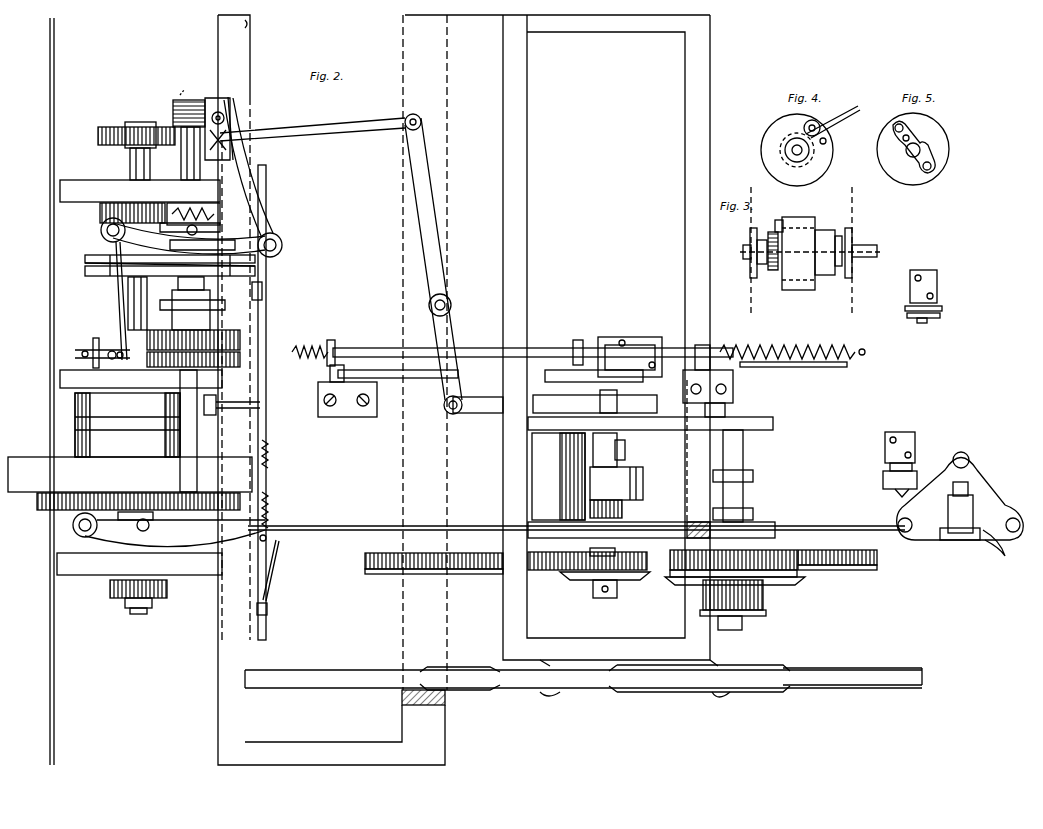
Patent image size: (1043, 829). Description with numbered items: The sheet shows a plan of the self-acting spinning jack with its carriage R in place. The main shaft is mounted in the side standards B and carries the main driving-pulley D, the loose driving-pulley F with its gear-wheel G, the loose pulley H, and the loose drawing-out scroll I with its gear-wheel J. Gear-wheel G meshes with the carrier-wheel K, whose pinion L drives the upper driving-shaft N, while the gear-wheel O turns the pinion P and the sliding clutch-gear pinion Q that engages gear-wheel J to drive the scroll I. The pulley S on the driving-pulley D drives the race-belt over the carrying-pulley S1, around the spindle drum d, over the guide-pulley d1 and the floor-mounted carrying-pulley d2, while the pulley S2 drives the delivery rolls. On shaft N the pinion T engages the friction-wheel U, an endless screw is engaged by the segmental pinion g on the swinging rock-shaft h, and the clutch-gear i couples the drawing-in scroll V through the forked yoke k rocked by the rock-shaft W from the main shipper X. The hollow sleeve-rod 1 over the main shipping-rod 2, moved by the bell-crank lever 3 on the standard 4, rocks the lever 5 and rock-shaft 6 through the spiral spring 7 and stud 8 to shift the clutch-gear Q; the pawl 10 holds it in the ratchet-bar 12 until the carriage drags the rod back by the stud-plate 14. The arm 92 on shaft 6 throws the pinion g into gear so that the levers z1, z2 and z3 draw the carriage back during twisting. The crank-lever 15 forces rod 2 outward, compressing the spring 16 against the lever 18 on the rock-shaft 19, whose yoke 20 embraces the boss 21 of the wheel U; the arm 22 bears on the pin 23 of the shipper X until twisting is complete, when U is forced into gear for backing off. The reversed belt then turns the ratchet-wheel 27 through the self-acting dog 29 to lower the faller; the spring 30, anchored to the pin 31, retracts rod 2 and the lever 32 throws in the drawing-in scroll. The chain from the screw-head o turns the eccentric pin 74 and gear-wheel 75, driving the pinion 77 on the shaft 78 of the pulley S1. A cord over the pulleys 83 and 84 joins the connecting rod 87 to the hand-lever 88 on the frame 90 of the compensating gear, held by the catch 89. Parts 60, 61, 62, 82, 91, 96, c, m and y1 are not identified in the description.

In FIG. 2, the hollow sleeve-rod 1 is at (533, 346).
In FIG. 2, the main shipping-rod 2 is at (98, 354).
In FIG. 2, the inclined bell-crank lever 3 is at (398, 378).
In FIG. 2, the standard 4 is at (347, 391).
In FIG. 2, the forked lever 5 is at (290, 342).
In FIG. 2, the rock-shaft 6 is at (270, 245).
In FIG. 2, the spiral spring 7 is at (310, 346).
In FIG. 2, the stud 8 is at (331, 346).
In FIG. 2, the pawl 10 is at (594, 377).
In FIG. 2, the ratchet-bar 12 is at (631, 364).
In FIG. 2, the stud-plate 14 is at (577, 345).
In FIG. 2, the crank-lever 15 is at (793, 372).
In FIG. 2, the spiral spring 16 is at (115, 347).
In FIG. 2, the forked lever 18 is at (88, 348).
In FIG. 2, the upright rock-shaft 19 is at (85, 525).
In FIG. 2, the forked yoke 20 is at (133, 523).
In FIG. 2, the boss of friction-gear wheel 21 is at (135, 512).
In FIG. 2, the arm 22 is at (175, 533).
In FIG. 2, the pin 23 is at (274, 508).
In FIG. 4, the ratchet-wheel 27 is at (797, 158).
In FIG. 3, the ratchet-wheel 27 is at (770, 275).
In FIG. 2, the self-acting dog 29 is at (616, 509).
In FIG. 3, the self-acting dog 29 is at (775, 220).
In FIG. 2, the spring 30 is at (787, 347).
In FIG. 2, the stud or pin 31 is at (870, 346).
In FIG. 2, the lever 32 is at (117, 301).
In FIG. 2, the clutch 60 is at (630, 552).
In FIG. 2, the gear 61 is at (733, 556).
In FIG. 2, the rack 62 is at (621, 563).
In FIG. 2, the pin 74 is at (728, 603).
In FIG. 2, the gear-wheel 75 is at (739, 585).
In FIG. 2, the pinion 77 is at (589, 572).
In FIG. 2, the shaft 78 is at (605, 597).
In FIG. 2, the arm 82 is at (232, 408).
In FIG. 2, the pulley 83 is at (270, 601).
In FIG. 2, the pulley 84 is at (279, 568).
In FIG. 2, the connecting cord or rod 87 is at (576, 520).
In FIG. 2, the hand-lever 88 is at (996, 551).
In FIG. 2, the catch 89 is at (960, 543).
In FIG. 2, the frame of compensating gear 90 is at (960, 496).
In FIG. 2, the spring 91 is at (274, 454).
In FIG. 2, the arm 92 is at (248, 168).
In FIG. 2, the pin 96 is at (272, 521).
In FIG. 2, the side standards B is at (139, 343).
In FIG. 2, the main driving-pulley D is at (132, 446).
In FIG. 2, the driving-pulley F is at (133, 423).
In FIG. 2, the gear-wheel G is at (62, 398).
In FIG. 2, the loose pulley H is at (157, 388).
In FIG. 2, the drawing-out scroll I is at (170, 270).
In FIG. 2, the gear-wheel J is at (124, 214).
In FIG. 2, the carrier-wheel K is at (232, 371).
In FIG. 2, the pinion L is at (268, 361).
In FIG. 2, the upper driving-shaft N is at (188, 486).
In FIG. 2, the gear-wheel O is at (173, 115).
In FIG. 2, the pinion P is at (222, 213).
In FIG. 2, the sliding clutch-gear pinion Q is at (202, 215).
In FIG. 2, the carriage R is at (639, 337).
In FIG. 2, the pulley S is at (130, 474).
In FIG. 2, the carrying-pulley S1 is at (616, 466).
In FIG. 4, the carrying-pulley S1 is at (832, 147).
In FIG. 3, the carrying-pulley S1 is at (798, 253).
In FIG. 2, the pulley S2 is at (128, 597).
In FIG. 2, the pinion T is at (138, 509).
In FIG. 2, the friction-wheel U is at (32, 519).
In FIG. 2, the drawing-in scroll V is at (205, 250).
In FIG. 2, the rock-shaft W is at (113, 230).
In FIG. 2, the main shipper X is at (267, 410).
In FIG. 2, the column c is at (733, 476).
In FIG. 2, the driving-drum d is at (558, 476).
In FIG. 2, the loose guide-pulley d1 is at (753, 494).
In FIG. 2, the carrying-pulley d2 is at (910, 464).
In FIG. 2, the concave segmental pinion g is at (217, 121).
In FIG. 2, the swinging rock-shaft h is at (235, 118).
In FIG. 2, the clutch-gear i is at (181, 88).
In FIG. 2, the forked yoke k is at (189, 238).
In FIG. 2, the block m is at (265, 289).
In FIG. 2, the screw-head o is at (219, 235).
In FIG. 2, the gear y' y1 is at (731, 598).
In FIG. 2, the lever z1 is at (320, 127).
In FIG. 2, the lever z2 is at (433, 266).
In FIG. 2, the lever z3 is at (478, 405).